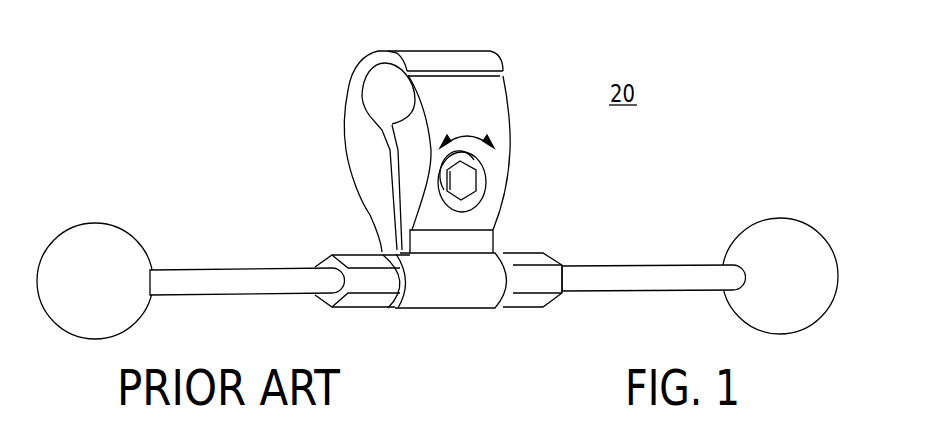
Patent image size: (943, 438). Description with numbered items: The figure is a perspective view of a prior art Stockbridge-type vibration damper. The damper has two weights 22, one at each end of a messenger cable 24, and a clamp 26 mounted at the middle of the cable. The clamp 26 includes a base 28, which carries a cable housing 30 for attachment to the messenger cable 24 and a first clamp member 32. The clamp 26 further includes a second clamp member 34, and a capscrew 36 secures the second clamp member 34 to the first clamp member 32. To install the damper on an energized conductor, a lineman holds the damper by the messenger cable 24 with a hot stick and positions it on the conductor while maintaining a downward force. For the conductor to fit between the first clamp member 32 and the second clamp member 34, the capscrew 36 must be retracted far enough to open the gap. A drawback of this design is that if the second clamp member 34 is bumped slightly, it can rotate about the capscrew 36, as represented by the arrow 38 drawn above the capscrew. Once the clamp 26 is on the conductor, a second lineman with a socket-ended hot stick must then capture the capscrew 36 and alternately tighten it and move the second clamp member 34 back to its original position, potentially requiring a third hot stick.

The weights 22 is at (92, 237).
The messenger cable 24 is at (184, 280).
The clamp 26 is at (260, 117).
The base 28 is at (385, 212).
The cable housing 30 is at (465, 297).
The first clamp member 32 is at (450, 58).
The second clamp member 34 is at (467, 128).
The capscrew 36 is at (467, 185).
The arrow 38 is at (487, 135).